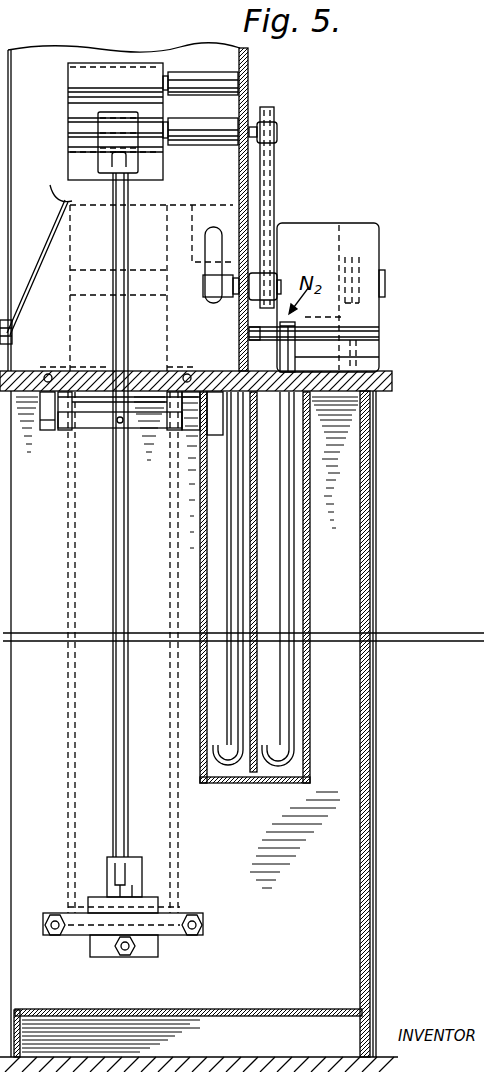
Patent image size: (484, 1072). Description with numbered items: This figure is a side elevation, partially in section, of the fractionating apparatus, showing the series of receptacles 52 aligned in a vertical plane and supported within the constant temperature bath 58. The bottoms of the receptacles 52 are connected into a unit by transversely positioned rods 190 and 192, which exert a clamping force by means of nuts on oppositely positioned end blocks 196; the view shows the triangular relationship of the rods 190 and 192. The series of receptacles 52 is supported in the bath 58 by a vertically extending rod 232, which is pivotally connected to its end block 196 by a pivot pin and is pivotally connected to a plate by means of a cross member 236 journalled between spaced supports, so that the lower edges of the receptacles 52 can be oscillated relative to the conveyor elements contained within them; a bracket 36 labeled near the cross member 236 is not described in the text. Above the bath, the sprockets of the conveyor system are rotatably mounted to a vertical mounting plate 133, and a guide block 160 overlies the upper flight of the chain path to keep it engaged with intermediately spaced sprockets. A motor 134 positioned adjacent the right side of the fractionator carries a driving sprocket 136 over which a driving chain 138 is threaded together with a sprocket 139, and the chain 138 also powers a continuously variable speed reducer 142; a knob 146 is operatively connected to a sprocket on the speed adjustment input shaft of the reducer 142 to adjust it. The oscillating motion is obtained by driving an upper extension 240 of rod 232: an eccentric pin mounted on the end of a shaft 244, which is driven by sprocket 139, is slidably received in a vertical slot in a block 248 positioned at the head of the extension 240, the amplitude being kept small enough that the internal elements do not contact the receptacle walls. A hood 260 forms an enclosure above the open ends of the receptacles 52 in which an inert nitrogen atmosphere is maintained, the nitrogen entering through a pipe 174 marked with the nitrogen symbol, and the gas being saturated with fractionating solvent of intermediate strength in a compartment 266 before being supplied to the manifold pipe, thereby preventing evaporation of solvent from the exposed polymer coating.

The vertical mounting plate 133 is at (248, 60).
The shaft 244 is at (250, 127).
The sprocket 139 is at (277, 122).
The driving chain 138 is at (274, 180).
The driving sprocket 136 is at (256, 268).
The motor 134 is at (369, 233).
The continuously variable speed reducer 142 is at (327, 247).
The nitrogen supply pipe 174 is at (360, 313).
The block 248 is at (123, 115).
The upper extension of rod 232 240 is at (45, 183).
The guide block 160 is at (208, 200).
The hood 260 is at (47, 250).
The knob 146 is at (15, 332).
The support bracket 36 is at (38, 428).
The cross member 236 is at (97, 423).
The constant temperature bath 58 is at (12, 593).
The receptacles 52 is at (67, 858).
The vertically extending rod 232 is at (125, 819).
The compartment 266 is at (310, 745).
The rod 190 is at (50, 937).
The rod 192 is at (118, 958).
The end block 196 is at (160, 955).